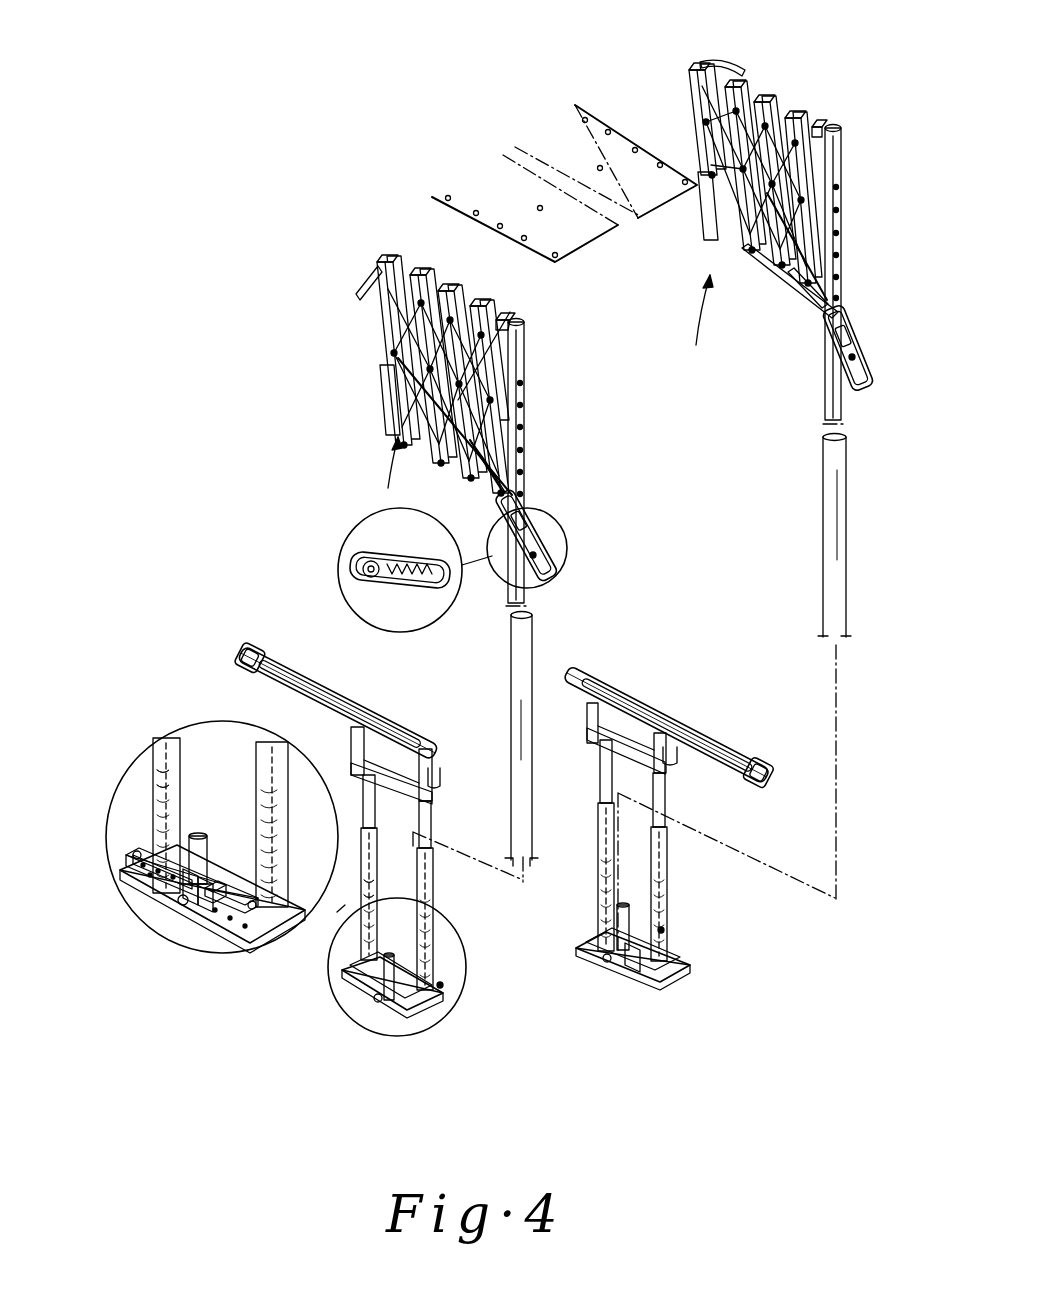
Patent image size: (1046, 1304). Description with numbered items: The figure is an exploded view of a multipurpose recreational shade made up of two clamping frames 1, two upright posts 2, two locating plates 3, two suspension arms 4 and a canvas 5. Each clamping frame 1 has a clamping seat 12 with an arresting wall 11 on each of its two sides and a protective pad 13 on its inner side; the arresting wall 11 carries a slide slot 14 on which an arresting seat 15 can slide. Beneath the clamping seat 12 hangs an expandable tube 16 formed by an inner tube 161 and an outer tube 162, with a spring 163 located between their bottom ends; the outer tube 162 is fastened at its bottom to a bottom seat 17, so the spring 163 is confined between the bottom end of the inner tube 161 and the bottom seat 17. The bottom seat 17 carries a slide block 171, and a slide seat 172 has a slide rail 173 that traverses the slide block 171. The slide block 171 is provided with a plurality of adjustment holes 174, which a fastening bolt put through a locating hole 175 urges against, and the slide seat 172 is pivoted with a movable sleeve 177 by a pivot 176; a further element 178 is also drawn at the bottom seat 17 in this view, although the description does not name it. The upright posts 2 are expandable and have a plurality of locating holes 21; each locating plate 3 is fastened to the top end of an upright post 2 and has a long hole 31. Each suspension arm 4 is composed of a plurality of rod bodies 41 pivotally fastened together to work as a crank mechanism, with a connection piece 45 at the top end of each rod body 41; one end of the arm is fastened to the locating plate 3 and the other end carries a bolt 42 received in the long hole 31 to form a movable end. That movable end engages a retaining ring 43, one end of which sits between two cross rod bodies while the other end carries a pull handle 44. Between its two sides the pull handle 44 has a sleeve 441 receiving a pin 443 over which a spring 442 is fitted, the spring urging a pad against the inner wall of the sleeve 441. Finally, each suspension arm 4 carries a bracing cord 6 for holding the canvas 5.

The clamping frame 1 is at (408, 1020).
The upright post 2 is at (355, 545).
The locating plate 3 is at (515, 322).
The suspension arm 4 is at (547, 392).
The canvas 5 is at (600, 262).
The bracing cord 6 is at (366, 290).
The arresting wall 11 is at (352, 746).
The clamping seat 12 is at (442, 755).
The protective pad 13 is at (442, 780).
The slide slot 14 is at (320, 690).
The arresting seat 15 is at (257, 650).
The expandable tube 16 is at (448, 885).
The bottom seat 17 is at (280, 915).
The locating holes 21 is at (527, 455).
The long hole 31 is at (512, 410).
The rod body 41 is at (380, 418).
The bolt 42 is at (815, 315).
The retaining ring 43 is at (785, 285).
The pull handle 44 is at (397, 556).
The connection piece 45 is at (405, 308).
The inner tube 161 is at (432, 822).
The outer tube 162 is at (440, 944).
The spring 163 is at (455, 1003).
The slide block 171 is at (240, 898).
The slide seat 172 is at (150, 900).
The slide rail 173 is at (210, 915).
The adjustment holes 174 is at (128, 880).
The locating hole 175 is at (190, 907).
The pivot 176 is at (152, 848).
The movable sleeve 177 is at (200, 834).
The bolt 178 is at (180, 904).
The sleeve 441 is at (535, 528).
The spring 442 is at (422, 548).
The pin 443 is at (540, 555).